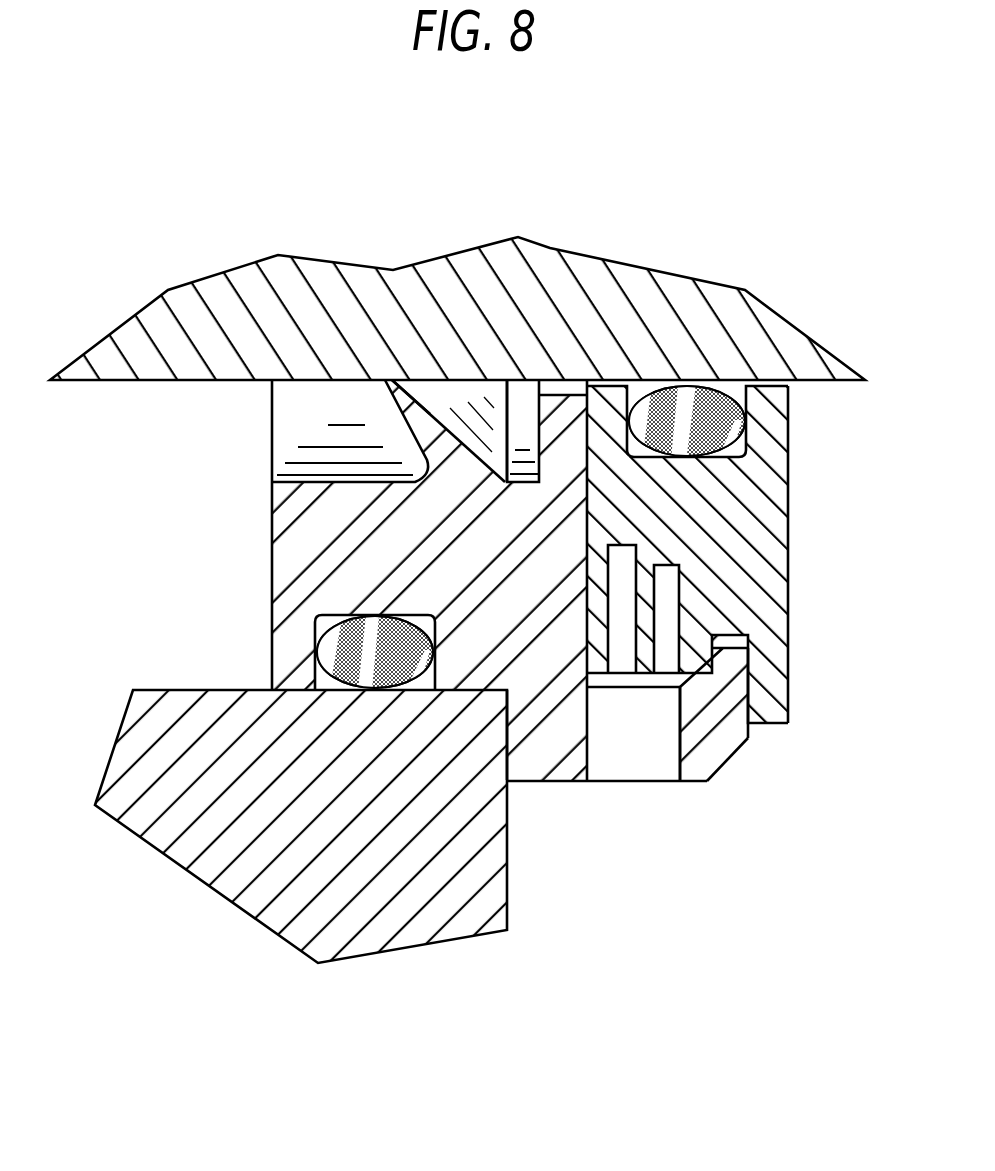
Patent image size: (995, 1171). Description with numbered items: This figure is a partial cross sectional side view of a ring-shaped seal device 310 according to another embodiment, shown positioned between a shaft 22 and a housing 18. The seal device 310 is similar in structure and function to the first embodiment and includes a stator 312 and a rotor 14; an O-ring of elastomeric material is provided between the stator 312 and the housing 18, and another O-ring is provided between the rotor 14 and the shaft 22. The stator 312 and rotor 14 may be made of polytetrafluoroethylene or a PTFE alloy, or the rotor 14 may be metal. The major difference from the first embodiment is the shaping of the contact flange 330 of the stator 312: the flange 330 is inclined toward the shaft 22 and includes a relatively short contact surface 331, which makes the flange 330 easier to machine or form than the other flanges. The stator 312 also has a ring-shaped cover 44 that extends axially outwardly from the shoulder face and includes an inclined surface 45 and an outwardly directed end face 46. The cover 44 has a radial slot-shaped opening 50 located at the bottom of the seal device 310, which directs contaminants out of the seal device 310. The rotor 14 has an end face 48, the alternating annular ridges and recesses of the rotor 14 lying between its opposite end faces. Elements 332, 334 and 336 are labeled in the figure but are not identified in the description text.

The rotor 14 is at (768, 497).
The housing 18 is at (252, 903).
The shaft 22 is at (637, 293).
The cover 44 is at (577, 783).
The inclined surface 45 is at (718, 770).
The end face 46 is at (750, 730).
The end face 48 is at (788, 602).
The opening 50 is at (637, 765).
The seal device 310 is at (205, 566).
The stator 312 is at (282, 578).
The contact flange 330 is at (430, 420).
The contact surface 331 is at (397, 382).
The recess 332 is at (383, 383).
The wall 334 is at (508, 432).
The slot 336 is at (562, 420).